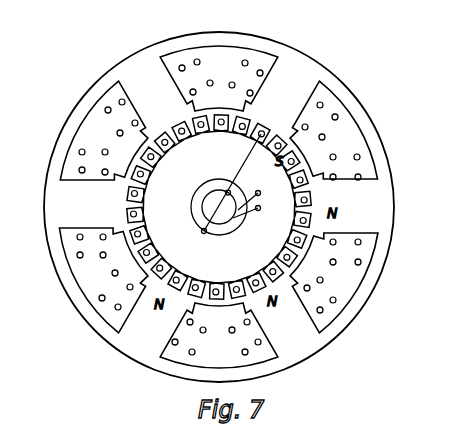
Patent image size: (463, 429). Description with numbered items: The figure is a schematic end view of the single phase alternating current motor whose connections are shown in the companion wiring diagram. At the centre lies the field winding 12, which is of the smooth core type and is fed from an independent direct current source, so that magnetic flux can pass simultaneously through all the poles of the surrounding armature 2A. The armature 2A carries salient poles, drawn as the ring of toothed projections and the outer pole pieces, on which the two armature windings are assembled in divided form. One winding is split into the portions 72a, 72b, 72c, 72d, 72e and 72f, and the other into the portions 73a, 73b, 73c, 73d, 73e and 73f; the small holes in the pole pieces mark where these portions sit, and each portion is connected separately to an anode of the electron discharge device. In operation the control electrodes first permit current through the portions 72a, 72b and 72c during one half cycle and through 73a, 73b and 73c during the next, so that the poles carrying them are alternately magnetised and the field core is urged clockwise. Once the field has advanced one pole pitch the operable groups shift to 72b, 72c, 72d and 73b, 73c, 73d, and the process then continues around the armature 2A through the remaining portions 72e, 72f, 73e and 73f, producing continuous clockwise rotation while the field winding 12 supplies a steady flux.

The armature 2A is at (369, 121).
The field winding 12 is at (139, 193).
The armature winding portion 72a is at (103, 258).
The armature winding portion 72b is at (117, 133).
The armature winding portion 72c is at (337, 115).
The armature winding portion 72d is at (78, 257).
The armature winding portion 72e is at (106, 110).
The armature winding portion 72f is at (325, 138).
The armature winding portion 73a is at (105, 175).
The armature winding portion 73b is at (182, 65).
The armature winding portion 73c is at (191, 93).
The armature winding portion 73d is at (82, 173).
The armature winding portion 73e is at (307, 291).
The armature winding portion 73f is at (253, 94).